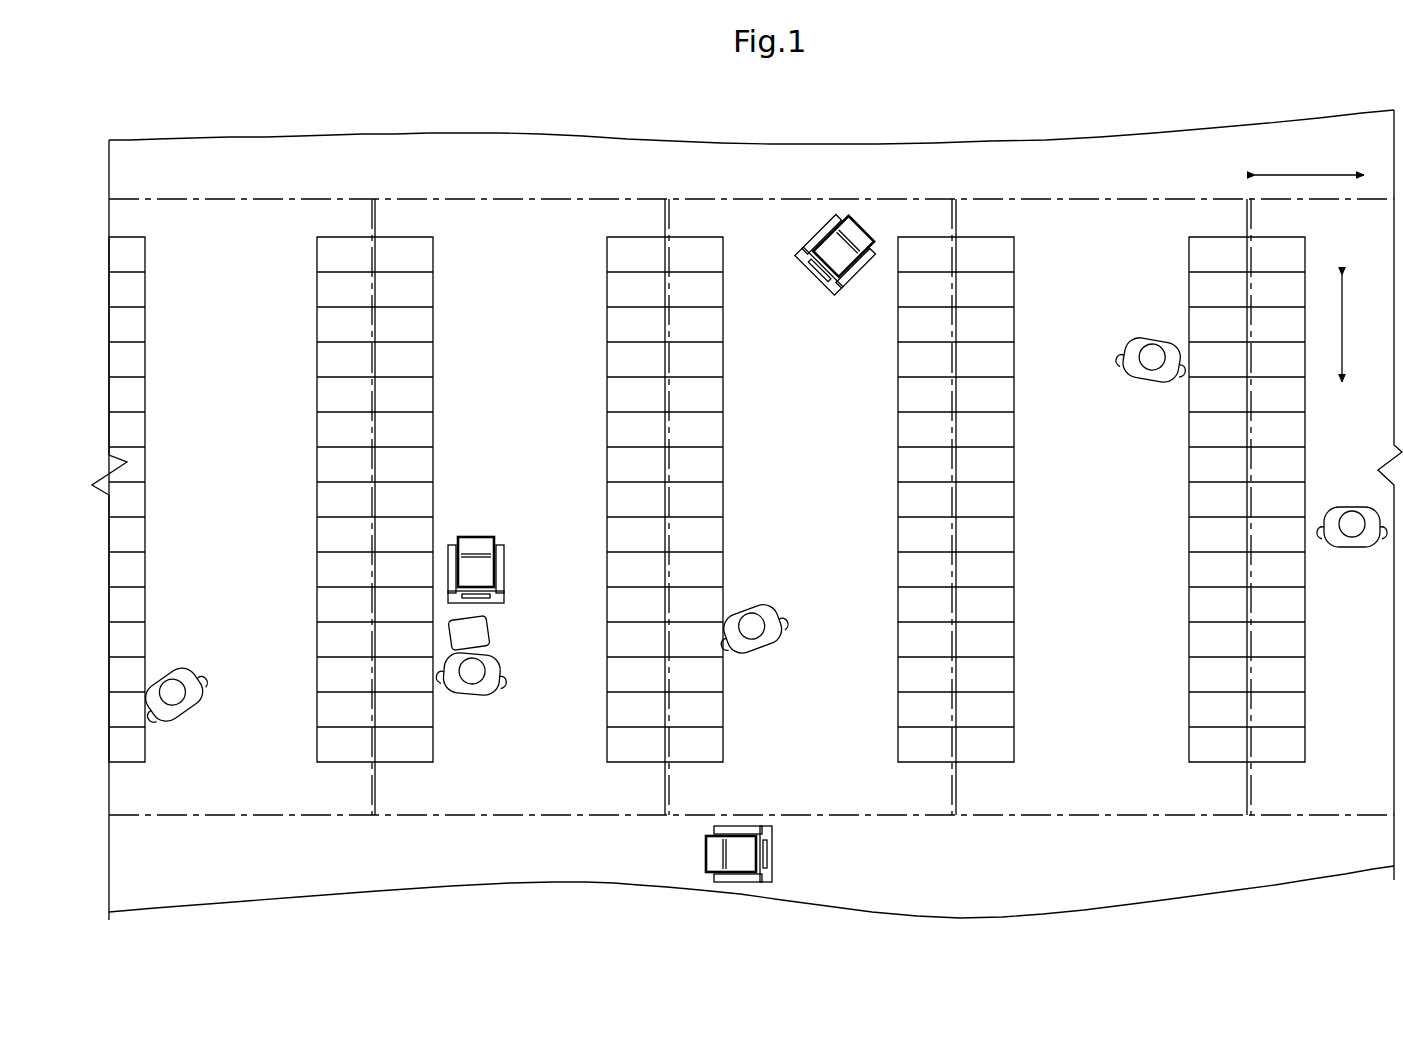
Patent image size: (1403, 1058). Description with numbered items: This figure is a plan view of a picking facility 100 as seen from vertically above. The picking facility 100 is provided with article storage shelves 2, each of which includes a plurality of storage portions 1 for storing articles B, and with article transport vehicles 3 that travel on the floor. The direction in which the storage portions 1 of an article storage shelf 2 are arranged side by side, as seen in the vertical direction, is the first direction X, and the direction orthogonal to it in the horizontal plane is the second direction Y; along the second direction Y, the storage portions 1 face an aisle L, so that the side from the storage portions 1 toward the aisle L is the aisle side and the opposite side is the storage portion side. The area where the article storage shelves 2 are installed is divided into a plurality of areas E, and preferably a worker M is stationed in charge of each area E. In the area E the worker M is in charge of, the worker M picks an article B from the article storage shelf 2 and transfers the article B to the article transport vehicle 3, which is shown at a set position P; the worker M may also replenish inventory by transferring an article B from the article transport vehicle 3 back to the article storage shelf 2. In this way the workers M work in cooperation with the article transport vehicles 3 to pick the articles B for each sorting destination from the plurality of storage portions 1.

The picking facility 100 is at (858, 125).
The storage portion 1 is at (415, 327).
The article storage shelf 2 is at (446, 412).
The article transport vehicle 3 is at (478, 536).
The set position P is at (500, 532).
The article B is at (488, 625).
The worker M is at (183, 672).
The aisle L is at (538, 242).
The area E is at (212, 815).
The first direction X is at (1352, 328).
The second direction Y is at (1309, 160).